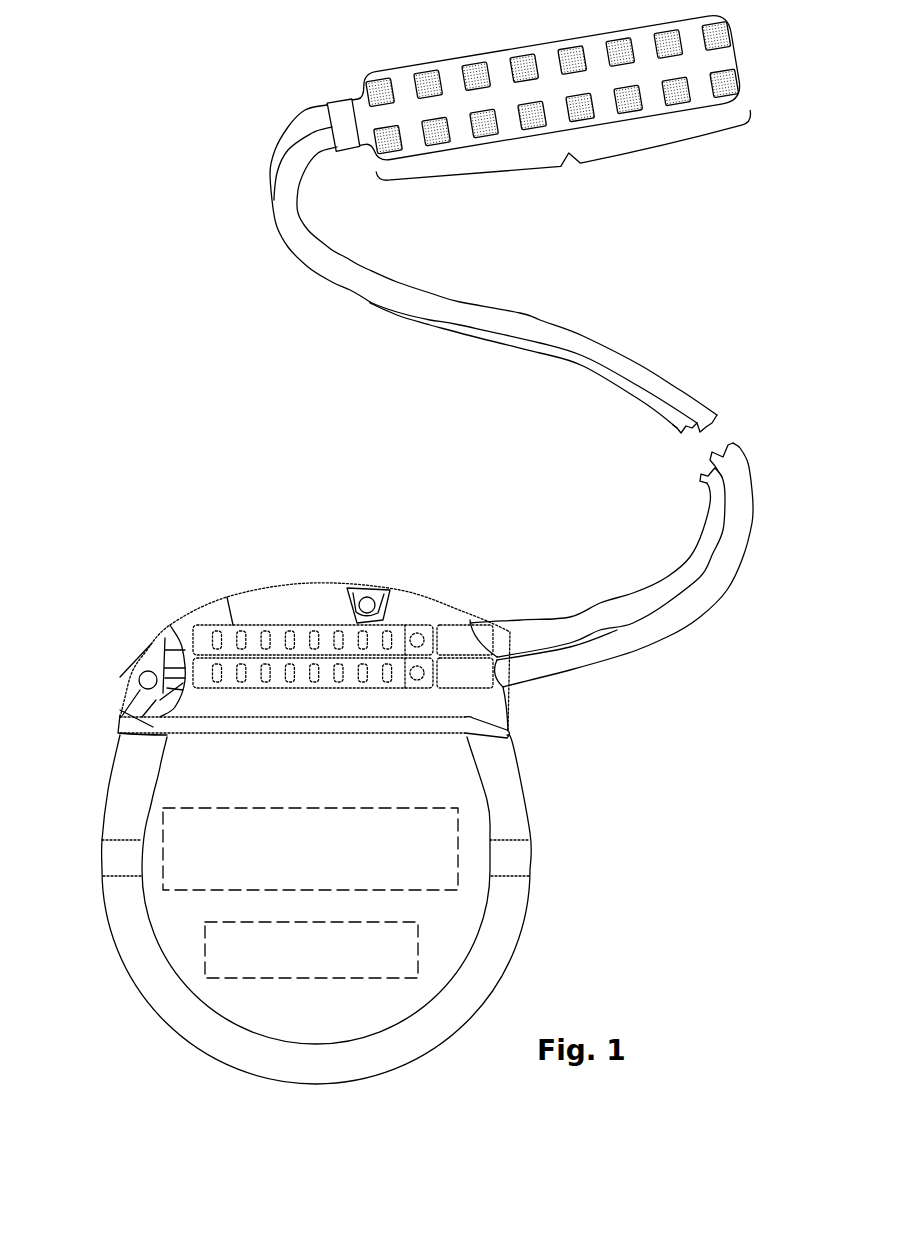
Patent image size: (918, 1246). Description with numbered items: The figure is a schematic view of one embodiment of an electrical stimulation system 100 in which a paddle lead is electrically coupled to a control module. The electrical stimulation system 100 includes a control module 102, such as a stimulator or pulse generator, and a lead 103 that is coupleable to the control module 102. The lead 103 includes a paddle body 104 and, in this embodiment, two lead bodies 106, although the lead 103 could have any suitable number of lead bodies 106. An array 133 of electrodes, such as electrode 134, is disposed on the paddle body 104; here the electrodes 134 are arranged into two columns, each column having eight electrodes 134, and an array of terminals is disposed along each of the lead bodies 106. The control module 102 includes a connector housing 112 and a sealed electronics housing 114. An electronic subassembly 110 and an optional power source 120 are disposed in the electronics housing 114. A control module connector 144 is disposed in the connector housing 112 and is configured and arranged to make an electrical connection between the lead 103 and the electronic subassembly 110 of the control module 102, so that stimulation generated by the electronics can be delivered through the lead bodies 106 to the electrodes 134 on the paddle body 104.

The electrical stimulation system 100 is at (132, 128).
The control module 102 is at (148, 615).
The lead 103 is at (672, 322).
The paddle body 104 is at (733, 57).
The lead body 106 is at (588, 333).
The electronic subassembly 110 is at (180, 853).
The connector housing 112 is at (292, 592).
The electronics housing 114 is at (163, 787).
The power source 120 is at (220, 955).
The array of electrodes 133 is at (557, 108).
The electrode 134 is at (380, 92).
The control module connector 144 is at (395, 627).